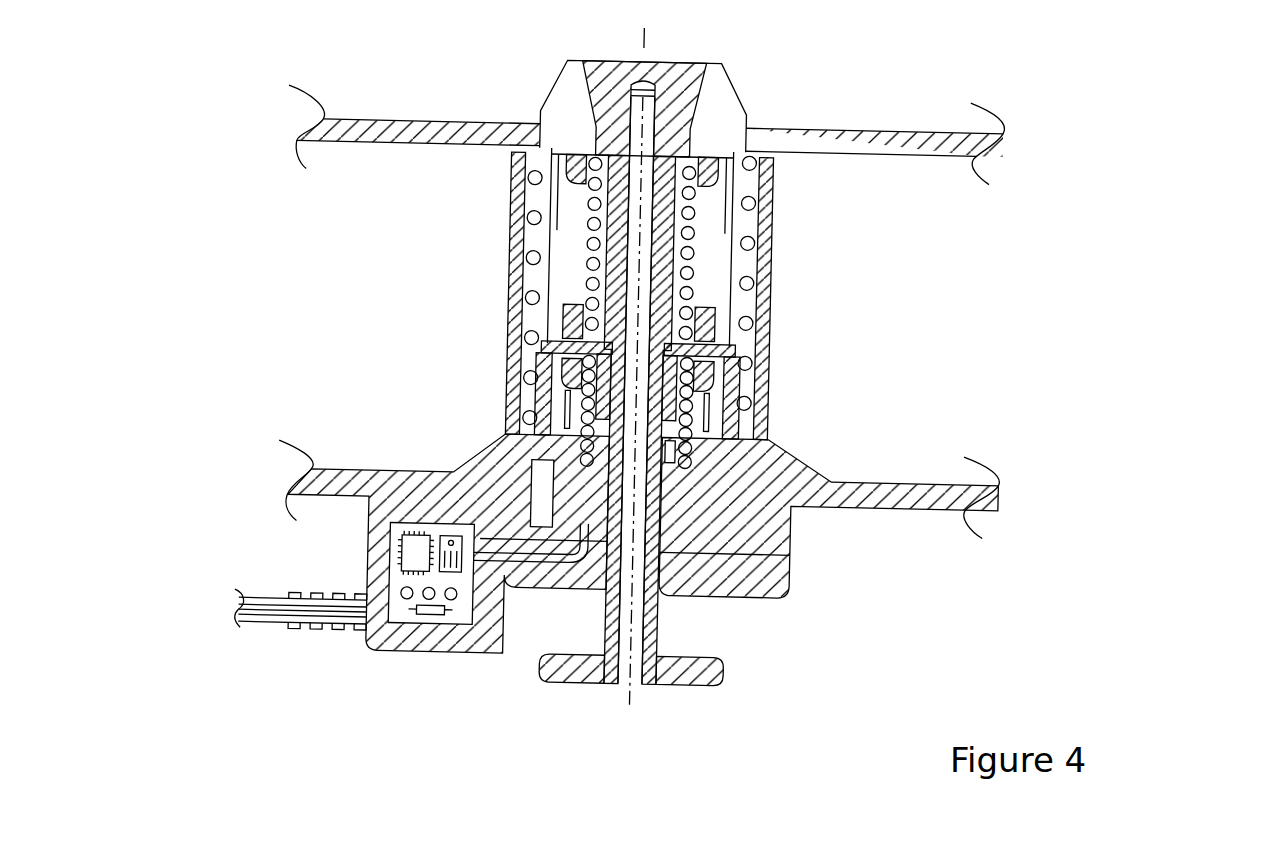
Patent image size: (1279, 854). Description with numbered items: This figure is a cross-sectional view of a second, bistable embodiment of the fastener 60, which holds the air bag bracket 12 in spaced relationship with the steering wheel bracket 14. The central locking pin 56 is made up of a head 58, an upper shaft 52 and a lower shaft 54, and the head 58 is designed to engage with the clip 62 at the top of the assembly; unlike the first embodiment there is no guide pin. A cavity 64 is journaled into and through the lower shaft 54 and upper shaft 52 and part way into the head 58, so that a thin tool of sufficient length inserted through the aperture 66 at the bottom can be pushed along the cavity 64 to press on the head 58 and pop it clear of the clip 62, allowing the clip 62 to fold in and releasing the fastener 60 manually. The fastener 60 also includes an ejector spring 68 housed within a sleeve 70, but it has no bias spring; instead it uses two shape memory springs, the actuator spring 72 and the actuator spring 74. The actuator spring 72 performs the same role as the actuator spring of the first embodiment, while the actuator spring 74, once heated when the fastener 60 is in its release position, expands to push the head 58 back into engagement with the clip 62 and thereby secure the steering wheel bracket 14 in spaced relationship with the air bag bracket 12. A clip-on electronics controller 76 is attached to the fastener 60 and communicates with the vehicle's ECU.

The air bag bracket 12 is at (323, 478).
The steering wheel bracket 14 is at (333, 126).
The upper shaft 52 is at (595, 253).
The lower shaft 54 is at (620, 393).
The locking pin 56 is at (663, 228).
The head 58 is at (607, 72).
The fastener 60 is at (1113, 156).
The clip 62 is at (718, 93).
The cavity 64 is at (650, 276).
The aperture 66 is at (627, 682).
The ejector spring 68 is at (743, 328).
The sleeve 70 is at (767, 382).
The actuator spring 72 is at (700, 432).
The actuator spring 74 is at (578, 199).
The clip-on electronics controller 76 is at (385, 655).